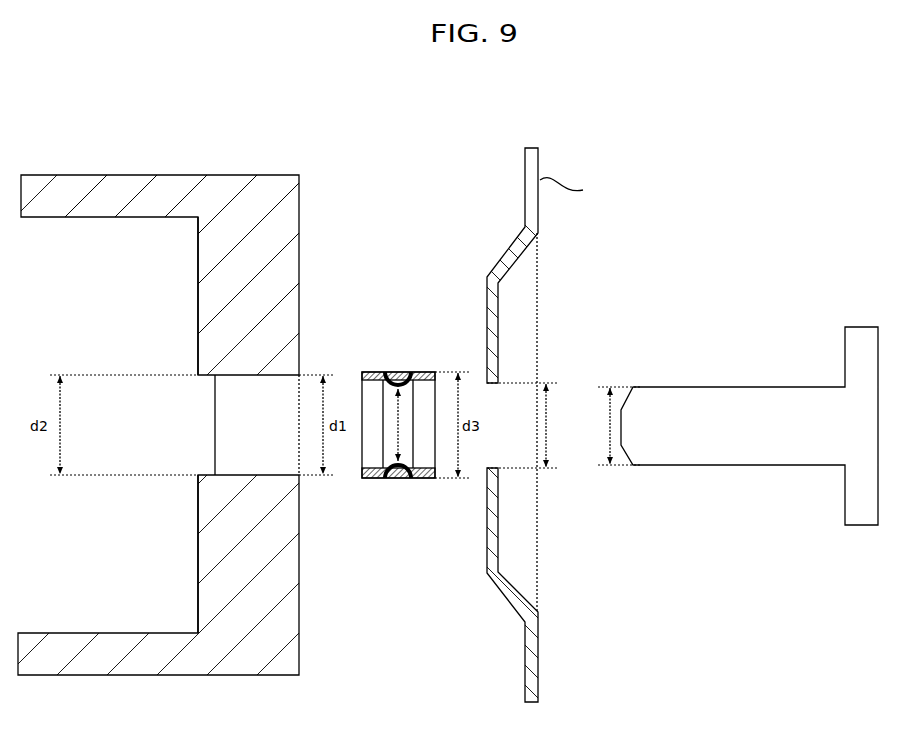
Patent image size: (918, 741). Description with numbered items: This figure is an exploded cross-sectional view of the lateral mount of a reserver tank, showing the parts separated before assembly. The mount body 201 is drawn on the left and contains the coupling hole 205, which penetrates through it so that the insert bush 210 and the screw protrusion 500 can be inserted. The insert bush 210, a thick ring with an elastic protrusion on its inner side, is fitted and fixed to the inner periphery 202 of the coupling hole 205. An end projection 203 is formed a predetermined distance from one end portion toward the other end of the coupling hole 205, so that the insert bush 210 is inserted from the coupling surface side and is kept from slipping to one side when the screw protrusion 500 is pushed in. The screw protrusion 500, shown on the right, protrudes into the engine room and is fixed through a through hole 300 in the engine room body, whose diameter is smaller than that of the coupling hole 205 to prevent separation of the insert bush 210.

The mount body 201 is at (140, 175).
The inner periphery 202 is at (250, 373).
The end projection 203 is at (198, 362).
The coupling hole 205 is at (245, 432).
The insert bush 210 is at (412, 490).
The through hole 300 is at (492, 418).
The screw protrusion 500 is at (770, 385).